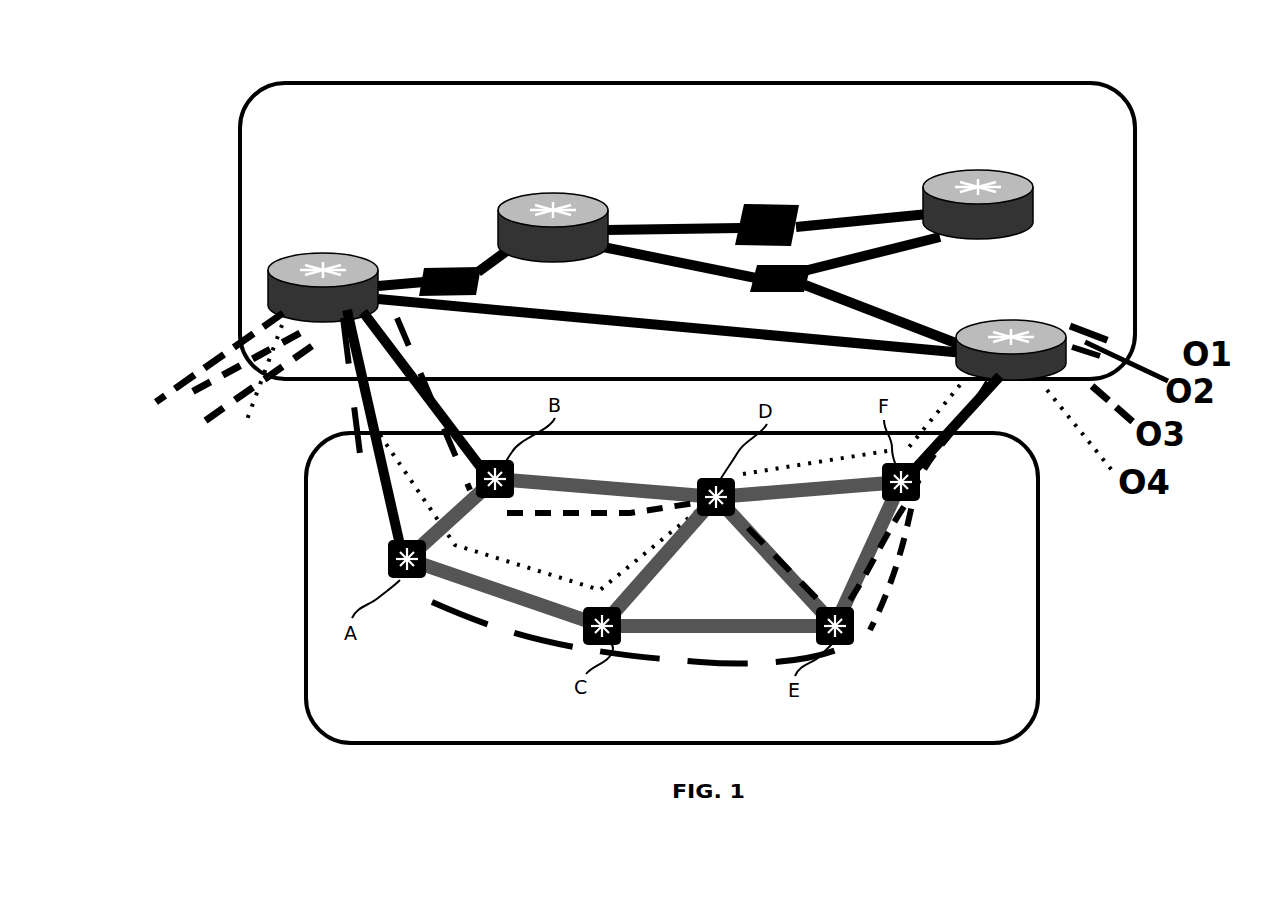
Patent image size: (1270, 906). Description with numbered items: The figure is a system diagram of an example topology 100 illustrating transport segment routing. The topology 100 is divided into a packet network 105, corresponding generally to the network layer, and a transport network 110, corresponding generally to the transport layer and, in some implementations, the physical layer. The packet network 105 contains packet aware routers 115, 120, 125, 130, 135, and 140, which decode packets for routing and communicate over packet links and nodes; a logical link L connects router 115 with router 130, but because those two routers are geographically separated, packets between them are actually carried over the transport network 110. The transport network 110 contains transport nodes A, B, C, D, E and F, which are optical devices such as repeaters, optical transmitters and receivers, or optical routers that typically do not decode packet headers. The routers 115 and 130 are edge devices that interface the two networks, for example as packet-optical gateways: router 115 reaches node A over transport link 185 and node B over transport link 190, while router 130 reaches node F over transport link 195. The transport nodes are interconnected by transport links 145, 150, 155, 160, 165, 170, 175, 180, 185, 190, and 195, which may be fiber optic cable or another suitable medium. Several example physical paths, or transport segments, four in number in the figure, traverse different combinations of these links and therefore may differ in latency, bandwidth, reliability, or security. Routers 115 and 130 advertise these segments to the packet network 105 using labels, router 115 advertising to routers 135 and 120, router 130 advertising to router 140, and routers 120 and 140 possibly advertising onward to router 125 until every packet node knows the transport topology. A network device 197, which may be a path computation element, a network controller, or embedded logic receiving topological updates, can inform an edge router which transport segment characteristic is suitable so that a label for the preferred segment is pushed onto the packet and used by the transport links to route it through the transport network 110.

The topology 100 is at (1172, 114).
The packet network 105 is at (782, 83).
The transport network 110 is at (1040, 692).
The router 115 is at (310, 264).
The router 120 is at (556, 196).
The router 125 is at (996, 174).
The router 130 is at (1014, 320).
The router 135 is at (455, 270).
The router 140 is at (806, 284).
The transport link 145 is at (464, 524).
The transport link 150 is at (470, 592).
The transport link 155 is at (612, 484).
The transport link 160 is at (652, 592).
The transport link 165 is at (778, 568).
The transport link 170 is at (790, 484).
The transport link 175 is at (720, 634).
The transport link 180 is at (882, 576).
The transport link 185 is at (390, 470).
The transport link 190 is at (432, 424).
The transport link 195 is at (1000, 398).
The network device 197 is at (772, 212).